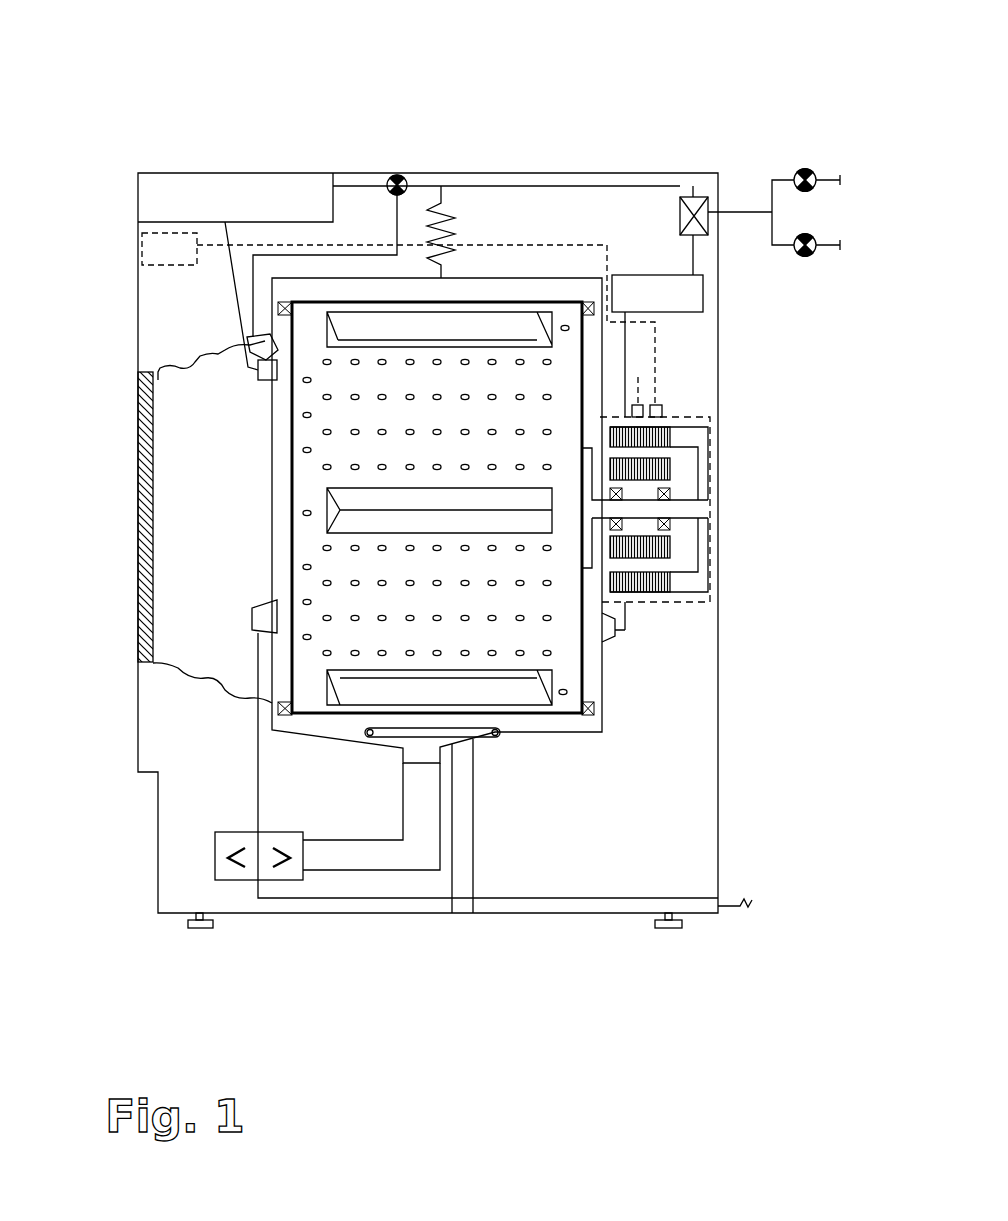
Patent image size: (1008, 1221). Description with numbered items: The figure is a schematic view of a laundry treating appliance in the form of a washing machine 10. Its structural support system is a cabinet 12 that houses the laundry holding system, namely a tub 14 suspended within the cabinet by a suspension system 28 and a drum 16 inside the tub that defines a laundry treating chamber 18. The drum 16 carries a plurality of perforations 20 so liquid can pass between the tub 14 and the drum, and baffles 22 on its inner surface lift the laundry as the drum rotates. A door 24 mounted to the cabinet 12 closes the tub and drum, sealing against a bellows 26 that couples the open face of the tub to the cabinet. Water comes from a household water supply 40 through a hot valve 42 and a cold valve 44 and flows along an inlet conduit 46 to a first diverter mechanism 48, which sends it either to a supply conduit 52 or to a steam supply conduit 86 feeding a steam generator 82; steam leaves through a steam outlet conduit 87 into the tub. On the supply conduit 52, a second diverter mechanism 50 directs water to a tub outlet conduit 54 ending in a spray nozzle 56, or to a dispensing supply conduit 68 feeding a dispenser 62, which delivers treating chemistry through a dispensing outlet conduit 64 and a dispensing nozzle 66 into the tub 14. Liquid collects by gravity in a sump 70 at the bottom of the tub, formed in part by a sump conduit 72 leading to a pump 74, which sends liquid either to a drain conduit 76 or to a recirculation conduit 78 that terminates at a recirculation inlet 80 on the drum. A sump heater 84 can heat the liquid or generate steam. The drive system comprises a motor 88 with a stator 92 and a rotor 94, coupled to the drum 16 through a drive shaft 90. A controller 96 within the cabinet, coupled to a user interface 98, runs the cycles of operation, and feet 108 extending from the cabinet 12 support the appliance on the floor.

The washing machine 10 is at (638, 29).
The cabinet 12 is at (638, 166).
The tub 14 is at (475, 278).
The drum 16 is at (360, 300).
The laundry treating chamber 18 is at (438, 432).
The perforations 20 is at (547, 397).
The baffles 22 is at (530, 693).
The door 24 is at (140, 496).
The bellows 26 is at (177, 663).
The suspension system 28 is at (419, 212).
The household water supply 40 is at (828, 162).
The hot water valve 42 is at (809, 169).
The cold water valve 44 is at (809, 257).
The inlet conduit 46 is at (739, 212).
The first diverter mechanism 48 is at (698, 195).
The second diverter mechanism 50 is at (388, 176).
The supply conduit 52 is at (567, 186).
The tub outlet conduit 54 is at (316, 235).
The spray nozzle 56 is at (258, 343).
The dispenser 62 is at (273, 198).
The dispensing outlet conduit 64 is at (232, 278).
The dispensing nozzle 66 is at (258, 378).
The dispensing supply conduit 68 is at (367, 185).
The sump 70 is at (486, 756).
The sump conduit 72 is at (415, 850).
The pump 74 is at (238, 882).
The drain conduit 76 is at (733, 906).
The recirculation conduit 78 is at (258, 772).
The recirculation inlet 80 is at (263, 618).
The steam generator 82 is at (703, 296).
The sump heater 84 is at (510, 738).
The steam supply conduit 86 is at (693, 243).
The steam outlet conduit 87 is at (625, 620).
The motor 88 is at (713, 417).
The drive shaft 90 is at (680, 510).
The stator 92 is at (662, 430).
The rotor 94 is at (670, 466).
The controller 96 is at (185, 265).
The user interface 98 is at (135, 245).
The feet 108 is at (195, 927).